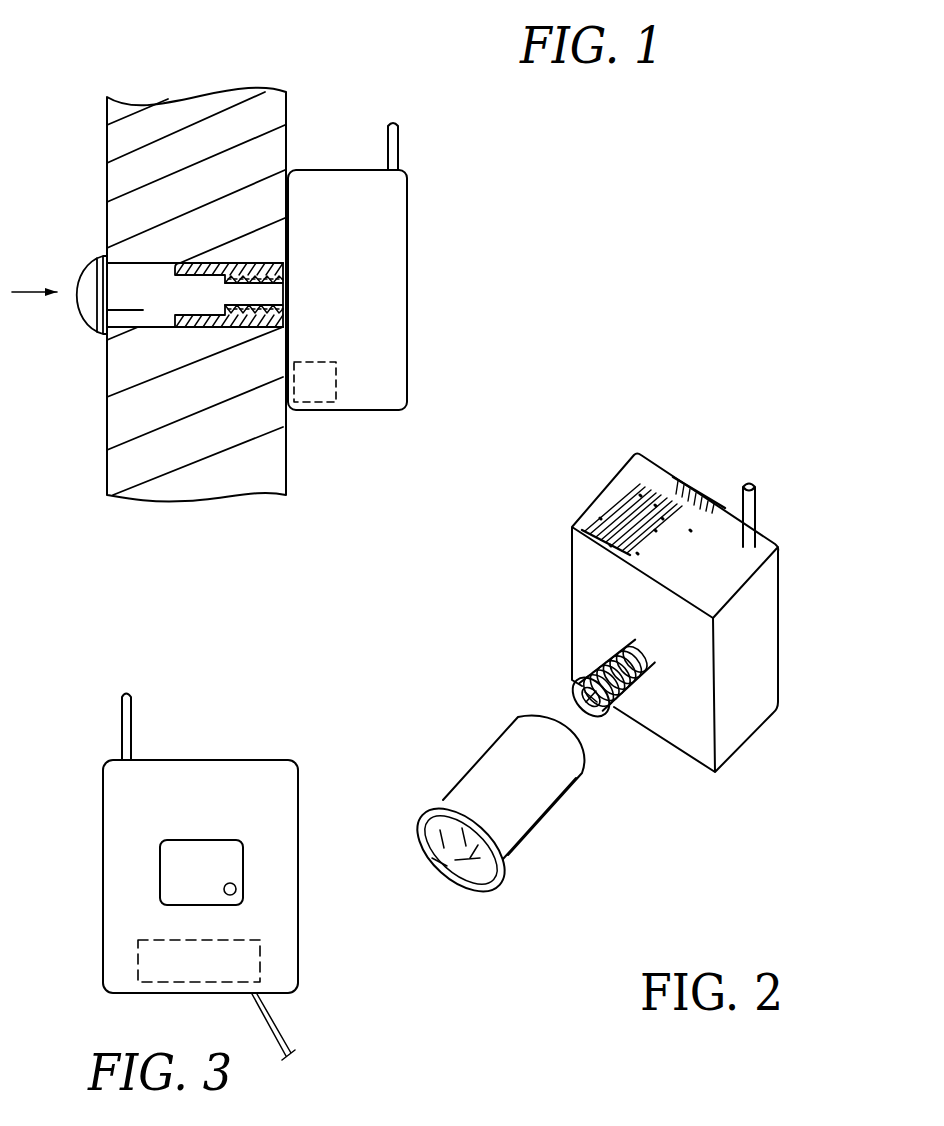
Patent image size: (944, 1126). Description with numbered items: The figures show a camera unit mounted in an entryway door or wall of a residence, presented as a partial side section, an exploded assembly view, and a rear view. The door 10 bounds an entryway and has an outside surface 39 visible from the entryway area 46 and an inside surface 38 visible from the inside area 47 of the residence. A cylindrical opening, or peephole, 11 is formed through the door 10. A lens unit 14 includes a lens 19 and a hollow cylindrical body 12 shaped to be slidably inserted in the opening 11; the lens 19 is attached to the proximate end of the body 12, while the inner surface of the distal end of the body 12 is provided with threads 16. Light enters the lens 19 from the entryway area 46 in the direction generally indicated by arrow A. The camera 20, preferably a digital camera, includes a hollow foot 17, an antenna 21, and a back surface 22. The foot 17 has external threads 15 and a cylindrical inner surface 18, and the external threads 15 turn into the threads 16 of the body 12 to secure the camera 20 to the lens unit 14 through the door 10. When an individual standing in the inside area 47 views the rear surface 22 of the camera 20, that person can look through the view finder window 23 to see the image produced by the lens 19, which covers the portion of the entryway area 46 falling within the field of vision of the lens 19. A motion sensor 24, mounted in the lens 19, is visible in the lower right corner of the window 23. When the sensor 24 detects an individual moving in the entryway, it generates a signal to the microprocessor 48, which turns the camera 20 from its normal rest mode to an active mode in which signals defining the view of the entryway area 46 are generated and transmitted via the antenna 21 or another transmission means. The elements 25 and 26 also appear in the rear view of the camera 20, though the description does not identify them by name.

In FIG. 1, the door 10 is at (304, 94).
In FIG. 1, the cylindrical opening 11 is at (286, 263).
In FIG. 1, the hollow cylindrical body 12 is at (152, 300).
In FIG. 2, the hollow cylindrical body 12 is at (494, 770).
In FIG. 1, the lens unit 14 is at (88, 238).
In FIG. 2, the lens unit 14 is at (562, 826).
In FIG. 1, the external threads 15 is at (257, 264).
In FIG. 2, the external threads 15 is at (606, 640).
In FIG. 1, the threads 16 is at (286, 322).
In FIG. 1, the hollow foot 17 is at (286, 283).
In FIG. 2, the hollow foot 17 is at (690, 668).
In FIG. 1, the cylindrical inner surface 18 is at (255, 296).
In FIG. 2, the cylindrical inner surface 18 is at (578, 708).
In FIG. 1, the lens 19 is at (84, 340).
In FIG. 2, the lens 19 is at (484, 878).
In FIG. 1, the camera 20 is at (421, 308).
In FIG. 2, the camera 20 is at (607, 468).
In FIG. 1, the antenna 21 is at (389, 136).
In FIG. 2, the antenna 21 is at (757, 512).
In FIG. 3, the antenna 21 is at (131, 693).
In FIG. 1, the back surface 22 is at (408, 396).
In FIG. 2, the back surface 22 is at (780, 603).
In FIG. 3, the back surface 22 is at (283, 770).
In FIG. 3, the view finder window 23 is at (190, 840).
In FIG. 3, the motion sensor 24 is at (238, 895).
In FIG. 3, the battery compartment 25 is at (268, 945).
In FIG. 3, the lead wire 26 is at (293, 1047).
In FIG. 1, the inside surface 38 is at (285, 468).
In FIG. 1, the outside surface 39 is at (97, 481).
In FIG. 1, the entryway area 46 is at (18, 416).
In FIG. 1, the inside area 47 is at (407, 461).
In FIG. 1, the microprocessor 48 is at (305, 412).
In FIG. 1, the arrow A is at (46, 291).